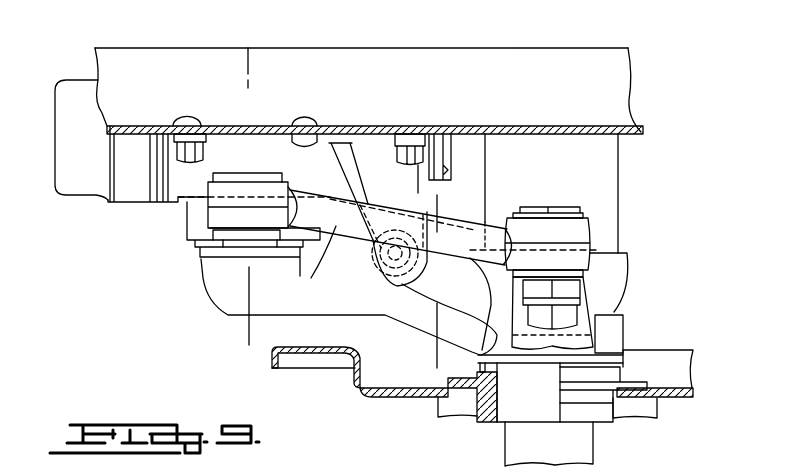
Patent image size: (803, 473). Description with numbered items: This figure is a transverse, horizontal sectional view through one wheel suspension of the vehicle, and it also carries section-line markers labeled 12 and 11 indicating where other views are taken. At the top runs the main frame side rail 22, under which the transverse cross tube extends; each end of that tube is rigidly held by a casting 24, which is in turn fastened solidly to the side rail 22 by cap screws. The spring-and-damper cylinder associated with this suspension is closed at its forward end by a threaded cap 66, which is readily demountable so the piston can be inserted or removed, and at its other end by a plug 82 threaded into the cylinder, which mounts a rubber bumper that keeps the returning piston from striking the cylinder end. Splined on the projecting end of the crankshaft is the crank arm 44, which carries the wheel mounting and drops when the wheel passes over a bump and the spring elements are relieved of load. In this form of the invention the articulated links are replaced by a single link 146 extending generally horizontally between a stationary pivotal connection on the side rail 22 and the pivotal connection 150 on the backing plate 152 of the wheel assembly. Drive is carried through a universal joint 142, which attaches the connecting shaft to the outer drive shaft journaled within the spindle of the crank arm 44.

The main frame side rail 22 is at (622, 128).
The threaded cap 66 is at (93, 189).
The casting 24 is at (178, 204).
The plug 82 is at (452, 172).
The link 146 is at (313, 277).
The crank arm 44 is at (311, 307).
The pivotal connection 150 is at (592, 222).
The universal joint 142 is at (613, 268).
The backing plate 152 is at (588, 301).
The section line 12- 12 is at (283, 39).
The section line 11- 11 is at (467, 197).